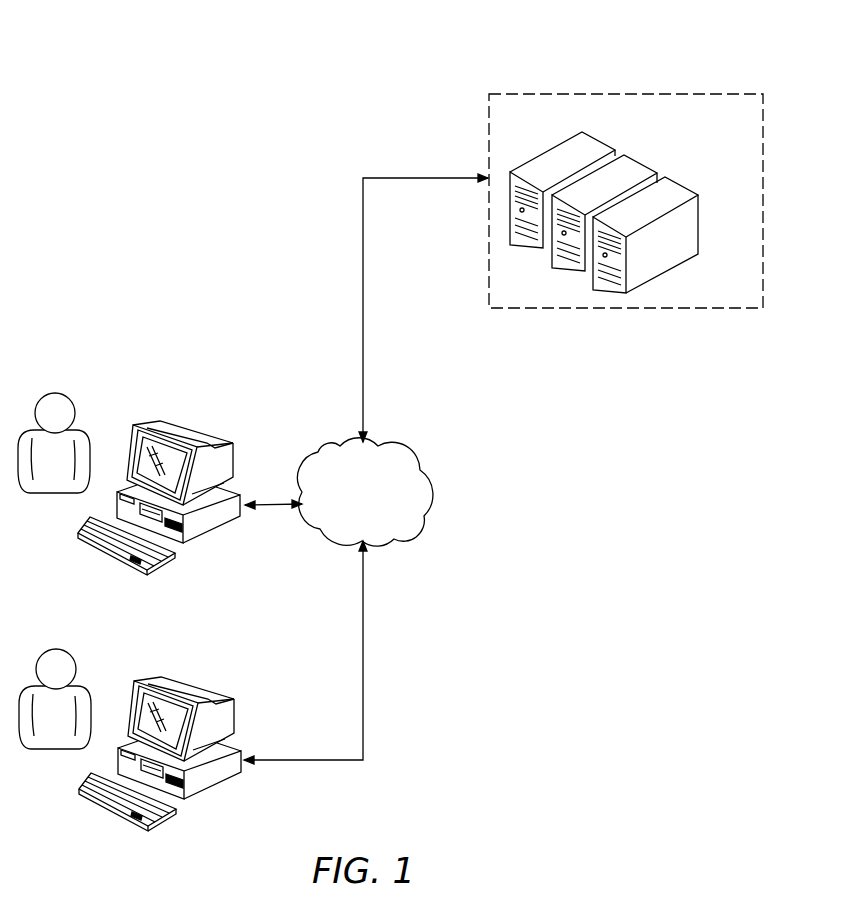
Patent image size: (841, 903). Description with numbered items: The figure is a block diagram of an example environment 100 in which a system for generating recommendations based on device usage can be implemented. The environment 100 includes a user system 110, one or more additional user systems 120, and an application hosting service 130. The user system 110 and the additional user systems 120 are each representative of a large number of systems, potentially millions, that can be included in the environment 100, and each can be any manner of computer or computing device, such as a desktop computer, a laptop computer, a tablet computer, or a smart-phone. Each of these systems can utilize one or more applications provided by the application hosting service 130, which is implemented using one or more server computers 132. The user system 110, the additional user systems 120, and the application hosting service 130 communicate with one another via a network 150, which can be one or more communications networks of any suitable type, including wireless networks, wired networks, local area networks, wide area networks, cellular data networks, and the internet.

The environment 100 is at (201, 78).
The user system 110 is at (208, 442).
The additional user system 120 is at (205, 696).
The application hosting service 130 is at (652, 93).
The server computer 132 is at (549, 150).
The network 150 is at (402, 444).